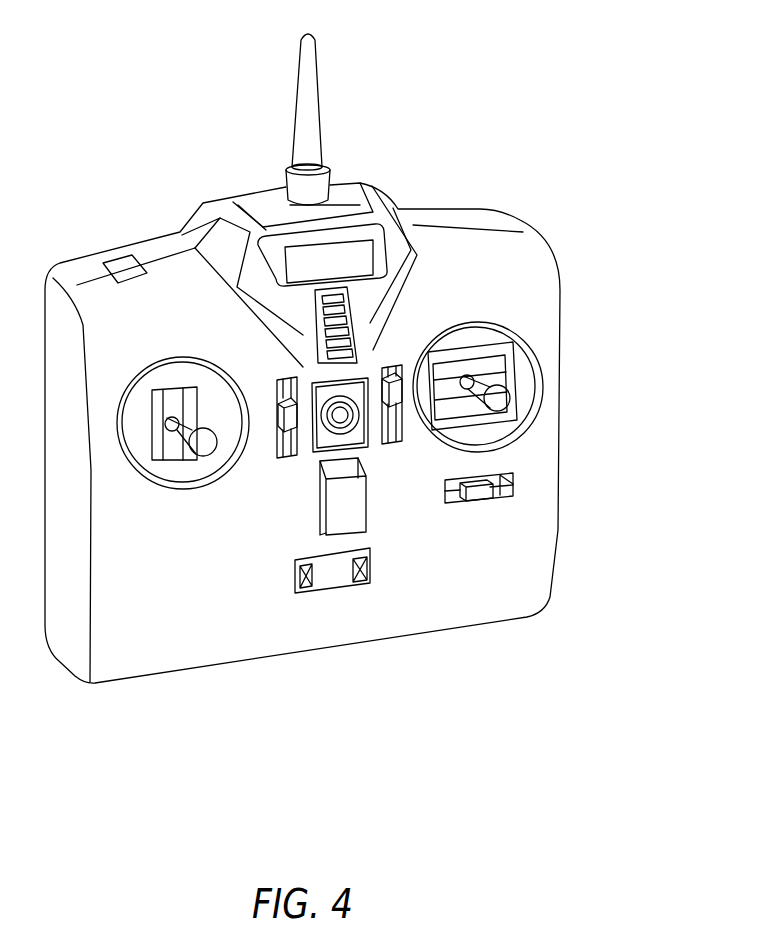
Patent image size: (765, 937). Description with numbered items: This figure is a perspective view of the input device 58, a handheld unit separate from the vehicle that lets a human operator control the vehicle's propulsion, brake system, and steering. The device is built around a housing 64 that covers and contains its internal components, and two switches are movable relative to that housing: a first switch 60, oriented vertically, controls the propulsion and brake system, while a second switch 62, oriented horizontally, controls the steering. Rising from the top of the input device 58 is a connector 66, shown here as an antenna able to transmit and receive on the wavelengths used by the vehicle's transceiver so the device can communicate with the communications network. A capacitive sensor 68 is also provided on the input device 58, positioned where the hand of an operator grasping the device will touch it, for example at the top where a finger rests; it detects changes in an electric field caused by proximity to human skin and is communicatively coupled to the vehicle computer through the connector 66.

The input device 58 is at (516, 60).
The first switch 60 is at (203, 477).
The second switch 62 is at (500, 413).
The housing 64 is at (560, 528).
The connector 66 is at (320, 92).
The capacitive sensor 68 is at (107, 258).